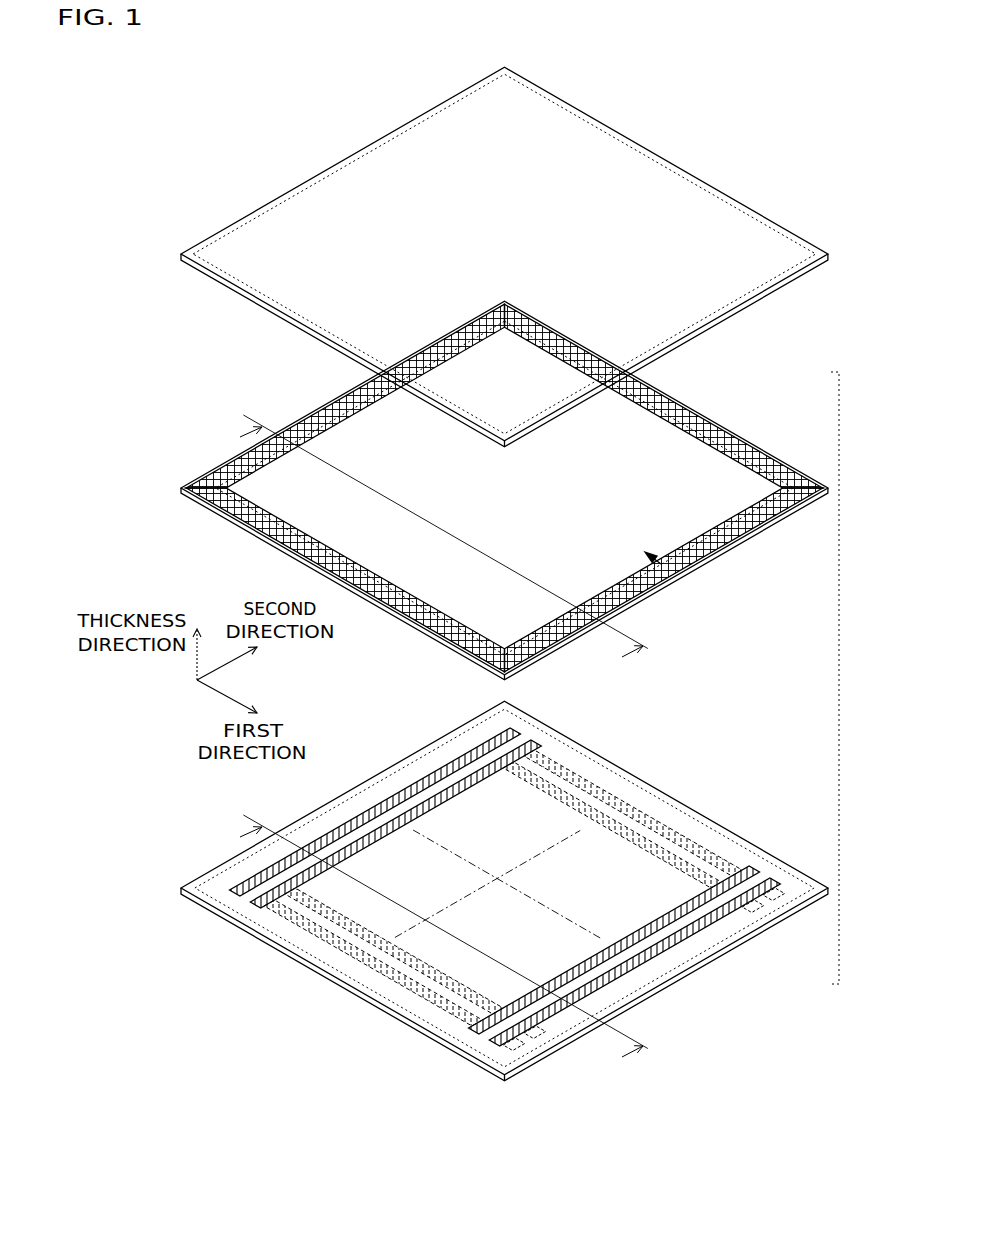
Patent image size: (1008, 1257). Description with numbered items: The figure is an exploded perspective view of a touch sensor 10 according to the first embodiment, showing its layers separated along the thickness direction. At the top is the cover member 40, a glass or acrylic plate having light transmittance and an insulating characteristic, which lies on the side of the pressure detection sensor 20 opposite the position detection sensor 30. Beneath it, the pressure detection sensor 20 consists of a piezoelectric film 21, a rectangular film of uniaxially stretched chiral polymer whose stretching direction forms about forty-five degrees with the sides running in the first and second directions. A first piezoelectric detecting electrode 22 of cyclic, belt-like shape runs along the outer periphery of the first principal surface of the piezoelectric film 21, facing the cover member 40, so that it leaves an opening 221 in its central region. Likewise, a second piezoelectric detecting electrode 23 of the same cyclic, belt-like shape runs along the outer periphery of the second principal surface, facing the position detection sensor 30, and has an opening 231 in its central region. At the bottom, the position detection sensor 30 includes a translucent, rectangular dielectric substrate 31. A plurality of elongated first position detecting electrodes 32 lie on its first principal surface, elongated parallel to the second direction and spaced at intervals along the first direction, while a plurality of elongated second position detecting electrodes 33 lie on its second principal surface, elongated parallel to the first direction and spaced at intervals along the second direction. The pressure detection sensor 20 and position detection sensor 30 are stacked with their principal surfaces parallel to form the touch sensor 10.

The touch sensor 10 is at (840, 676).
The pressure detection sensor 20 is at (507, 490).
The piezoelectric film 21 is at (810, 504).
The first piezoelectric detecting electrode 22 is at (708, 443).
The opening 221 is at (645, 411).
The second piezoelectric detecting electrode 23 is at (650, 598).
The opening 231 is at (673, 573).
The position detection sensor 30 is at (509, 896).
The dielectric substrate 31 is at (688, 972).
The first position detecting electrode 32 is at (523, 867).
The second position detecting electrode 33 is at (664, 996).
The cover member 40 is at (774, 289).